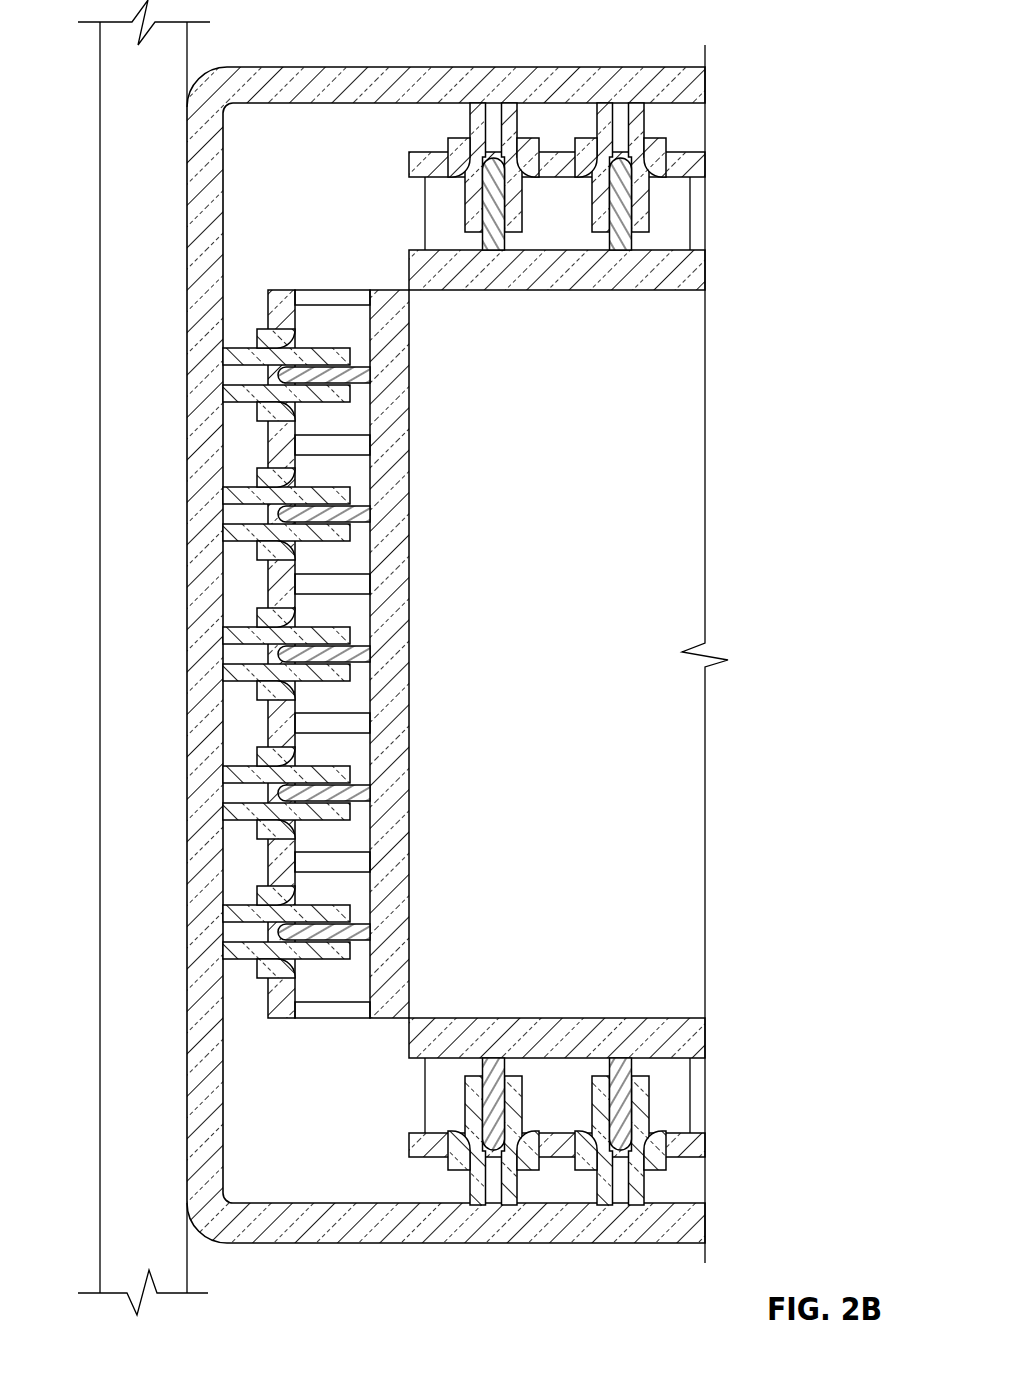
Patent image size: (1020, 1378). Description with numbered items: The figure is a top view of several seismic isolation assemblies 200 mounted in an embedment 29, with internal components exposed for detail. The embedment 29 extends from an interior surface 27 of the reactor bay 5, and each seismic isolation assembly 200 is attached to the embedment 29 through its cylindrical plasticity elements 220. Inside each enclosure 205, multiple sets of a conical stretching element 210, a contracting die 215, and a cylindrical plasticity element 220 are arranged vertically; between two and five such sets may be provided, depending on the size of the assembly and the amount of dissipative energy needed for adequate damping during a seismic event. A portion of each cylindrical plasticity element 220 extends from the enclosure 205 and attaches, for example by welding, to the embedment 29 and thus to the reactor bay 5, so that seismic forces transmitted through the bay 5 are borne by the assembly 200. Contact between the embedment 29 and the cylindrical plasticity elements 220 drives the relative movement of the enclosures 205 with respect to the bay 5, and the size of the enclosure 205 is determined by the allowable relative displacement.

The reactor bay 5 is at (100, 327).
The interior surface 27 is at (188, 56).
The embedment 29 is at (328, 67).
The seismic isolation assembly 200 is at (668, 302).
The enclosure 205 is at (695, 162).
The conical stretching element 210 is at (620, 180).
The contracting die 215 is at (658, 137).
The cylindrical plasticity element 220 is at (645, 117).